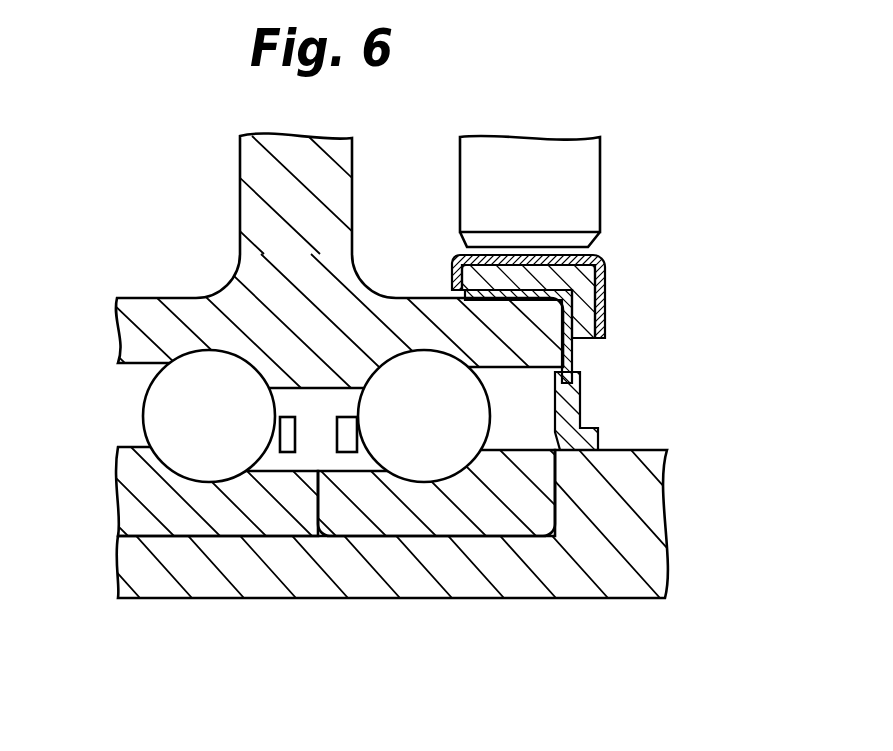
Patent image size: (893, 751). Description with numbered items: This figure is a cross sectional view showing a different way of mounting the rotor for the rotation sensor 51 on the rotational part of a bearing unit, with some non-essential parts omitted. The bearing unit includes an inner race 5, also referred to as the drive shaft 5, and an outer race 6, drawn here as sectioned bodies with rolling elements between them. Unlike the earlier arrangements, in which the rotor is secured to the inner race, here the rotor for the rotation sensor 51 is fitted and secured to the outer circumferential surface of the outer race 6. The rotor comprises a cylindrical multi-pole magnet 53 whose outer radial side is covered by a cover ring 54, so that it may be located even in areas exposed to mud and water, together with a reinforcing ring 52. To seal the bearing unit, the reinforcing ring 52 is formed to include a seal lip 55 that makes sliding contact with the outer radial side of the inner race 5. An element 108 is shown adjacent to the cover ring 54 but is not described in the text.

The outer race 6 is at (418, 318).
The inner race 5 is at (480, 517).
The pressing member 108 is at (578, 172).
The rotor for the rotation sensor 51 is at (559, 314).
The reinforcing ring 52 is at (573, 354).
The cylindrical multi-pole magnet 53 is at (606, 290).
The cover ring 54 is at (606, 262).
The seal lip 55 is at (583, 417).